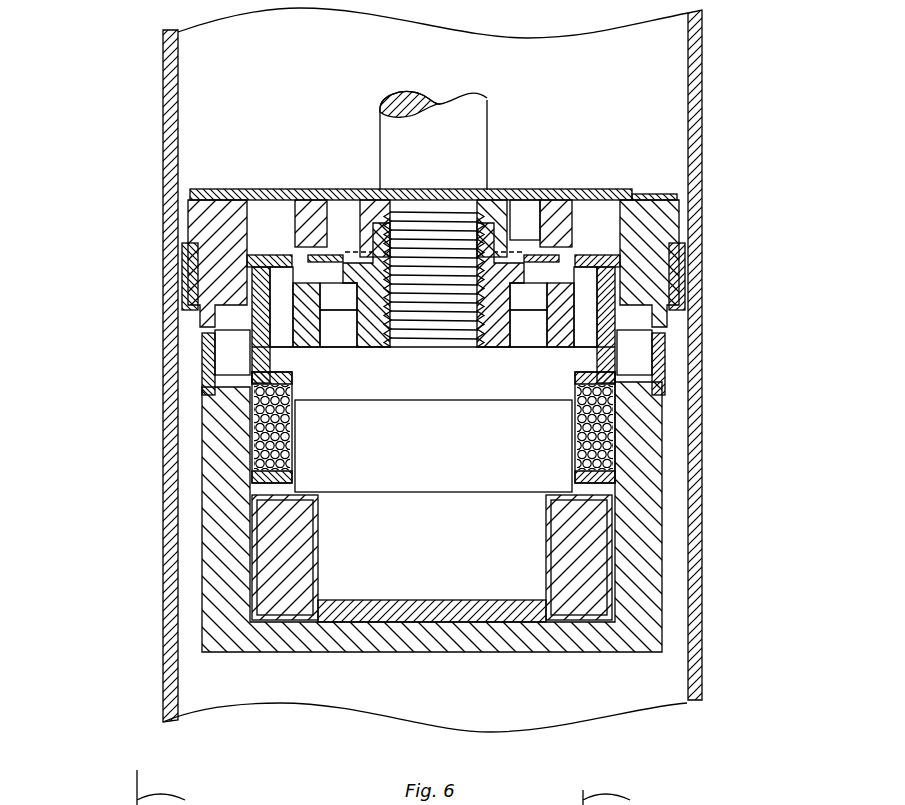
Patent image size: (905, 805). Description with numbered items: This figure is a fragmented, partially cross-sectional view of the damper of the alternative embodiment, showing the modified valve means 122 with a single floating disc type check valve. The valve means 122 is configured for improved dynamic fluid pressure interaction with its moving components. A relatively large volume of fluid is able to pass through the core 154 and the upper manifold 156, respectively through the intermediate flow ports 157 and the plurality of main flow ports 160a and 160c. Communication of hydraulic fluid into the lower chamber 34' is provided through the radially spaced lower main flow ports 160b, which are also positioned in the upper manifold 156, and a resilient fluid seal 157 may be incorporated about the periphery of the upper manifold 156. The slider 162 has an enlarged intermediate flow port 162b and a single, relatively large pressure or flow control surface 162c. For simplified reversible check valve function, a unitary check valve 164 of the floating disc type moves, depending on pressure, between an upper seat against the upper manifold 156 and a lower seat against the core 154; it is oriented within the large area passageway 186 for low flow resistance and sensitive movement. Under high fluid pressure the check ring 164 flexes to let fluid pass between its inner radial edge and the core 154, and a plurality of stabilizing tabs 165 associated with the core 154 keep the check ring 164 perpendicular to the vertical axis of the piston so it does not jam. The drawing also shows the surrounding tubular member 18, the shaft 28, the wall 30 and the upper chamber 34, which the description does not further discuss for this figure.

The tubular member 18 is at (705, 133).
The shaft 28 is at (448, 165).
The wall 30 is at (165, 54).
The upper chamber 34 is at (433, 37).
The lower chamber 34' is at (425, 701).
The valve means 122 is at (191, 485).
The core 154 is at (493, 335).
The upper manifold 156 is at (246, 233).
The intermediate flow ports 157 is at (350, 333).
The main flow port 160a is at (348, 200).
The lower main flow ports 160b is at (240, 357).
The main flow port 160c is at (285, 189).
The slider 162 is at (250, 375).
The intermediate flow port 162b is at (237, 336).
The pressure or flow control surface 162c is at (255, 333).
The check valve 164 is at (322, 254).
The stabilizing tabs 165 is at (503, 200).
The passageway 186 is at (352, 304).